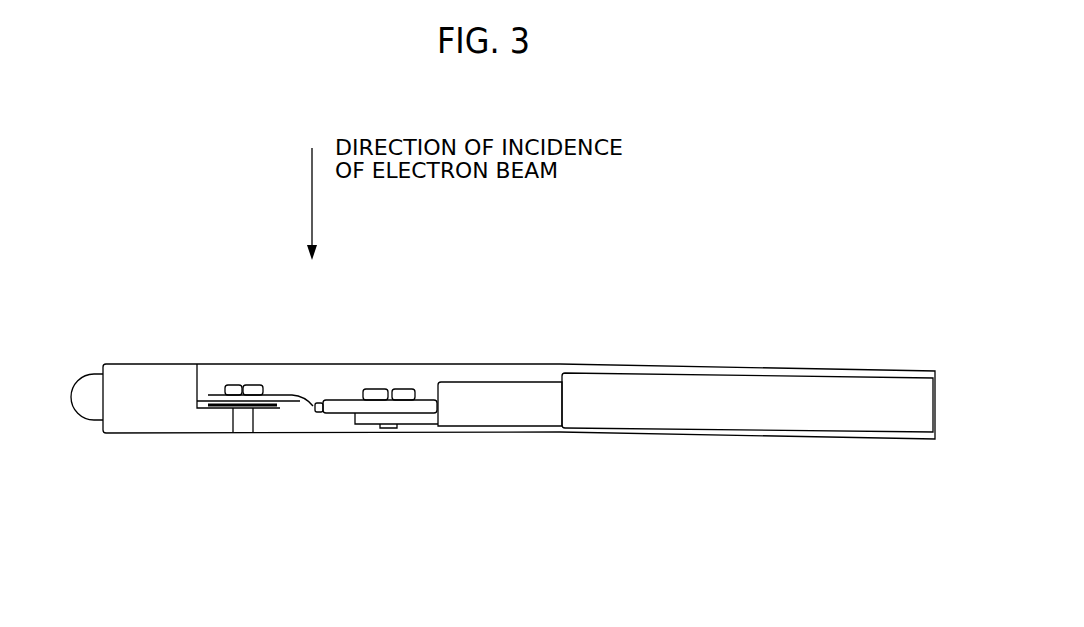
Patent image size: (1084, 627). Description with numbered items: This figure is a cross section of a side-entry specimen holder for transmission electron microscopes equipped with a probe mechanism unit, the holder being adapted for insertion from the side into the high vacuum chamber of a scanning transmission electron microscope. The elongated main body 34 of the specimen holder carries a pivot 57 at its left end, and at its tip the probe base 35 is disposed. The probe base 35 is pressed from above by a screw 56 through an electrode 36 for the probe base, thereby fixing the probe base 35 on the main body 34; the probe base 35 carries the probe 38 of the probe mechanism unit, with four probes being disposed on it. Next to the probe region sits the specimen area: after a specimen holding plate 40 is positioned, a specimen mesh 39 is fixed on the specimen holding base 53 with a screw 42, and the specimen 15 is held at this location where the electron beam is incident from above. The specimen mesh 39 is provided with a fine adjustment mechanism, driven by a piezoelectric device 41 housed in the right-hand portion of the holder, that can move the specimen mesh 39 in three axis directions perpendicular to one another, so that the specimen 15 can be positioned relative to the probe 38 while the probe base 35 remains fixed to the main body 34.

The specimen 15 is at (318, 408).
The main body 34 is at (153, 418).
The probe base 35 is at (281, 398).
The electrode for the probe base 36 is at (266, 395).
The probe 38 is at (308, 405).
The specimen mesh 39 is at (341, 400).
The specimen holding plate 40 is at (428, 400).
The piezoelectric device 41 is at (622, 403).
The screw 42 is at (399, 389).
The specimen holding base 53 is at (495, 382).
The screw 56 is at (240, 385).
The pivot 57 is at (87, 373).